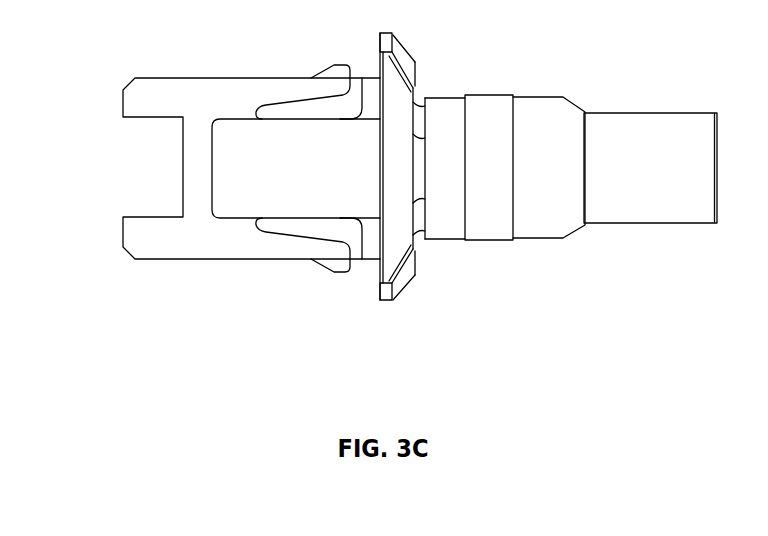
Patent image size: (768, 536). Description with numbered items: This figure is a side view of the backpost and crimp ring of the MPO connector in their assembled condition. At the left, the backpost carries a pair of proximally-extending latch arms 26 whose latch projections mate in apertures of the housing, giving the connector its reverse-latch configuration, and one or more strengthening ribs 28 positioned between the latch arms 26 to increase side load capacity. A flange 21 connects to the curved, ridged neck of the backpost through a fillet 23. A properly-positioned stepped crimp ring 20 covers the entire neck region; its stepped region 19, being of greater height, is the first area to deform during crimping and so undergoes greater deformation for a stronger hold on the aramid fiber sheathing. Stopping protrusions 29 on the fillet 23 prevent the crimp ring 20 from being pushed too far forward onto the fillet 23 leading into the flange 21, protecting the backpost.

The stepped region 19 is at (479, 176).
The crimp ring 20 is at (635, 178).
The flange 21 is at (381, 176).
The fillet 23 is at (418, 219).
The latch arms 26 is at (195, 110).
The strengthening rib 28 is at (285, 176).
The stopping protrusions 29 is at (418, 92).